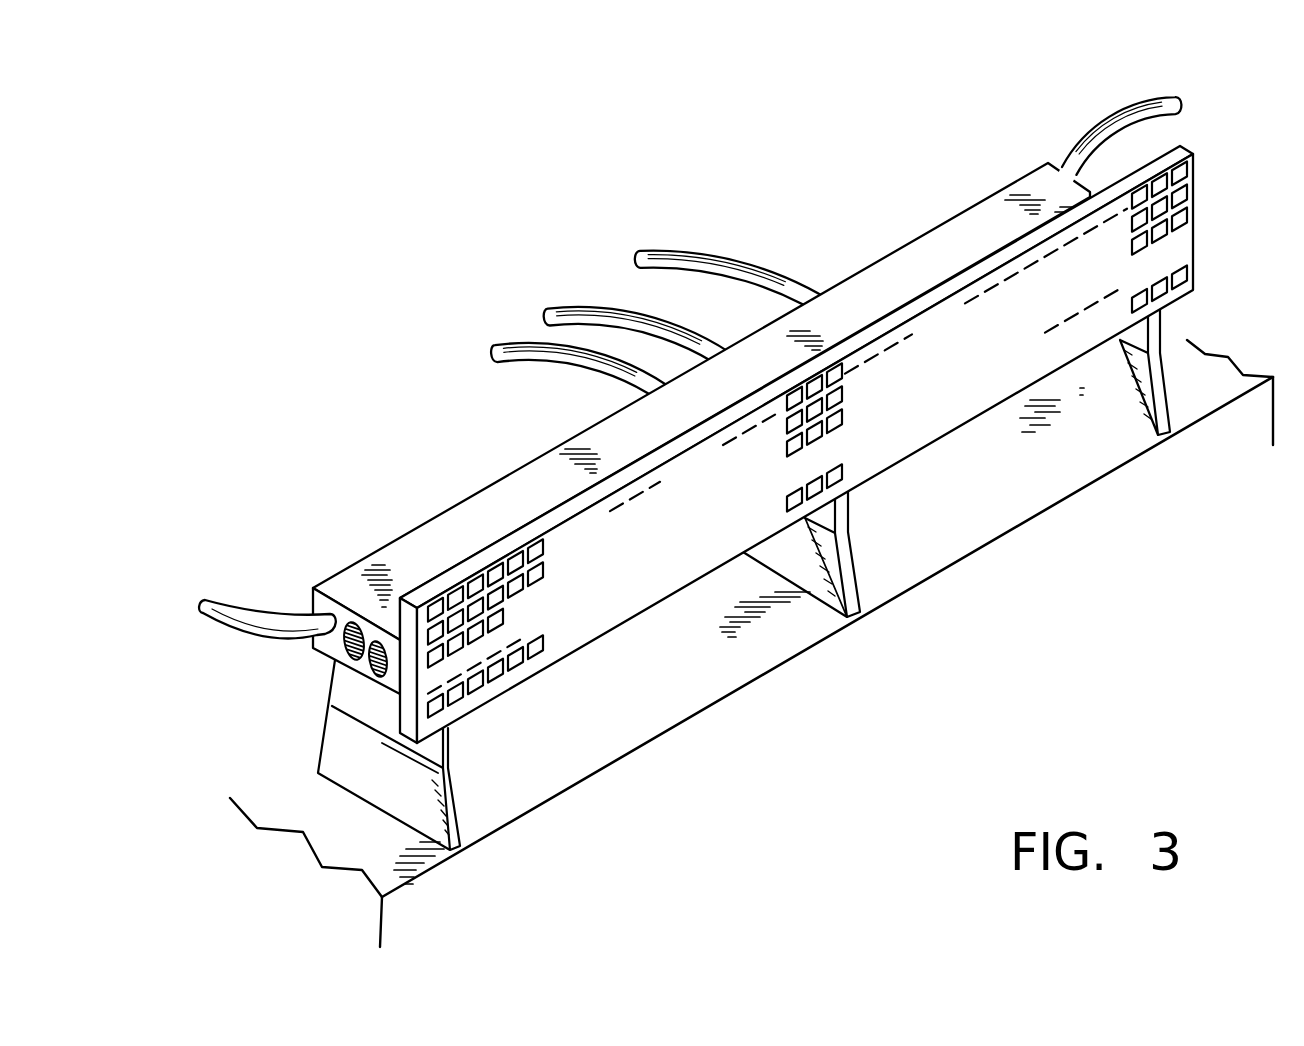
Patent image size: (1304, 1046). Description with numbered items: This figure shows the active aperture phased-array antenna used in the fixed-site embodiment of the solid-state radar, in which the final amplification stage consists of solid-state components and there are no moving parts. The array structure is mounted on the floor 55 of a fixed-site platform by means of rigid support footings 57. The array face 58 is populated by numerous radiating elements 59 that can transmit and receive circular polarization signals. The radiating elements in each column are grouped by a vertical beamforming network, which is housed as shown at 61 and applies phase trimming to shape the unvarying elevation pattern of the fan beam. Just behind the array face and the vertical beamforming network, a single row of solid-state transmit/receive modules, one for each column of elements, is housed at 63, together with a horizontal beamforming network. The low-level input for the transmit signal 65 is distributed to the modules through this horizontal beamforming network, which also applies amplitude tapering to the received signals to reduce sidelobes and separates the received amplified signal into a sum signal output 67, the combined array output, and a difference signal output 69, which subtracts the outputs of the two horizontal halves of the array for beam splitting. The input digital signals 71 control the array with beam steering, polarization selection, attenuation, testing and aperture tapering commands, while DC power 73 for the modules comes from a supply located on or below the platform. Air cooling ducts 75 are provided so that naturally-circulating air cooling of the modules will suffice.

The floor 55 is at (763, 672).
The rigid support footings 57 is at (1125, 395).
The array face 58 is at (915, 423).
The radiating elements 59 is at (538, 652).
The vertical beamforming network housing 61 is at (972, 268).
The transmit/receive module housing 63 is at (418, 548).
The transmit signal input 65 is at (522, 258).
The sum signal output 67 is at (545, 317).
The difference signal output 69 is at (493, 353).
The input digital signals 71 is at (113, 555).
The DC power 73 is at (1206, 90).
The air cooling ducts 75 is at (365, 662).